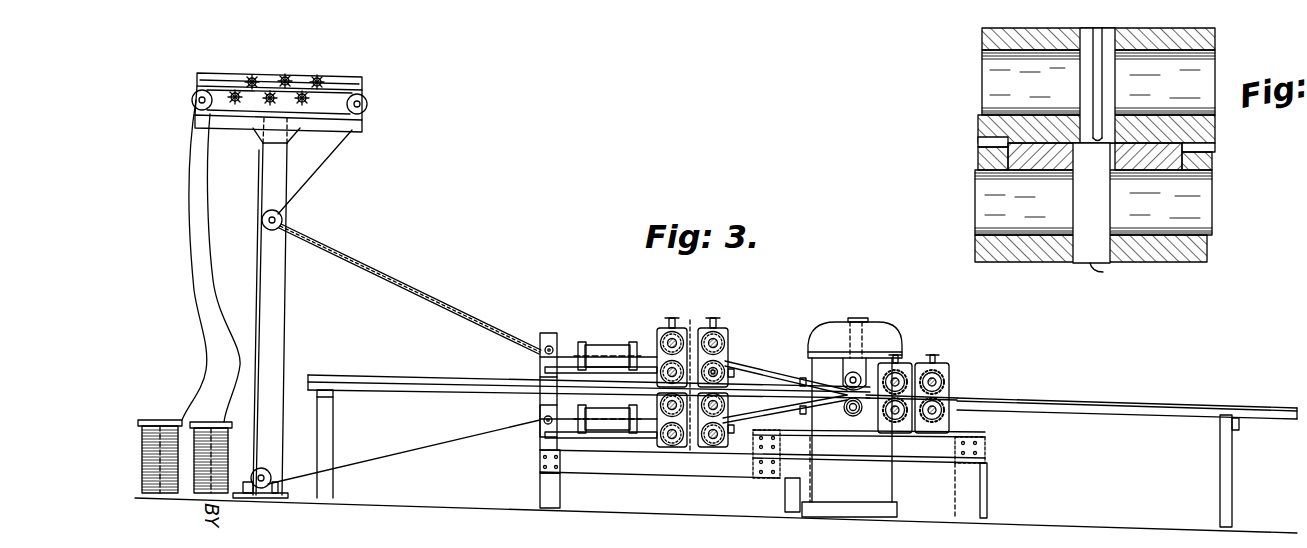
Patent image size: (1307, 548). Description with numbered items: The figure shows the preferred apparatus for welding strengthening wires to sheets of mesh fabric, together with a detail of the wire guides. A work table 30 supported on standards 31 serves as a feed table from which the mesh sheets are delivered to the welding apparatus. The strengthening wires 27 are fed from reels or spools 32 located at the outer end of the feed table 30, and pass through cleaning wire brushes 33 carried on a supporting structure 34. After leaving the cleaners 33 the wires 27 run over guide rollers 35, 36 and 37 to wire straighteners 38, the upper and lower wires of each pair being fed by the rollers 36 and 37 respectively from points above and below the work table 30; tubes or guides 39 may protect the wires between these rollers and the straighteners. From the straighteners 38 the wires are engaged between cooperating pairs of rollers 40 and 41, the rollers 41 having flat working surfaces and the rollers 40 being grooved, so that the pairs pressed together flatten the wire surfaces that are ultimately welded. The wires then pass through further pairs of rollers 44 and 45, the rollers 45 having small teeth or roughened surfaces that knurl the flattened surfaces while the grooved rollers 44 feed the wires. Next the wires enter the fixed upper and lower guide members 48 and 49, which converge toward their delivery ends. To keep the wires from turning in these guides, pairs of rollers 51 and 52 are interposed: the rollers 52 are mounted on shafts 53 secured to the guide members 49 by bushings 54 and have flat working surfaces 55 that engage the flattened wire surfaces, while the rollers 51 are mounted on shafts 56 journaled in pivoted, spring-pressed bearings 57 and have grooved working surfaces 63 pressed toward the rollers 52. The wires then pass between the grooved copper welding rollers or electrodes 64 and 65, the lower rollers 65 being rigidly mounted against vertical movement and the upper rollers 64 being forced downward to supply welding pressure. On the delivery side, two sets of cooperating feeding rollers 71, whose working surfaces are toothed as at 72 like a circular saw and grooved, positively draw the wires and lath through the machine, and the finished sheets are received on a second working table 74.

In FIG. 3, the strengthening wires 27 is at (322, 165).
In FIG. 3, the work table 30 is at (465, 393).
In FIG. 3, the standards 31 is at (333, 430).
In FIG. 3, the reels or spools 32 is at (191, 494).
In FIG. 3, the wire brushes 33 is at (288, 75).
In FIG. 3, the supporting structure 34 is at (247, 125).
In FIG. 3, the guide roller 35 is at (367, 103).
In FIG. 3, the guide roller 36 is at (283, 220).
In FIG. 3, the guide roller 37 is at (262, 490).
In FIG. 3, the wire straighteners 38 is at (598, 345).
In FIG. 3, the tubes or guides 39 is at (388, 280).
In FIG. 3, the rollers 40 is at (678, 335).
In FIG. 3, the rollers 41 is at (656, 364).
In FIG. 3, the rollers 44 is at (722, 337).
In FIG. 3, the rollers 45 is at (717, 371).
In FIG. 3, the guide member 48 is at (768, 370).
In FIG. 9, the guide member 48 is at (1000, 142).
In FIG. 3, the guide member 49 is at (767, 399).
In FIG. 9, the guide member 49 is at (1185, 150).
In FIG. 9, the rollers 51 is at (1087, 33).
In FIG. 9, the rollers 52 is at (1075, 261).
In FIG. 9, the shafts 53 is at (988, 200).
In FIG. 9, the bushings 54 is at (978, 160).
In FIG. 9, the flat working surfaces 55 is at (1103, 272).
In FIG. 9, the shafts 56 is at (987, 78).
In FIG. 9, the bearings 57 is at (982, 40).
In FIG. 9, the grooved working surfaces 63 is at (1104, 34).
In FIG. 3, the upper welding roller 64 is at (866, 372).
In FIG. 3, the lower welding roller 65 is at (853, 418).
In FIG. 3, the feeding rollers 71 is at (899, 374).
In FIG. 3, the toothed surface 72 is at (951, 383).
In FIG. 3, the second working table 74 is at (1103, 410).